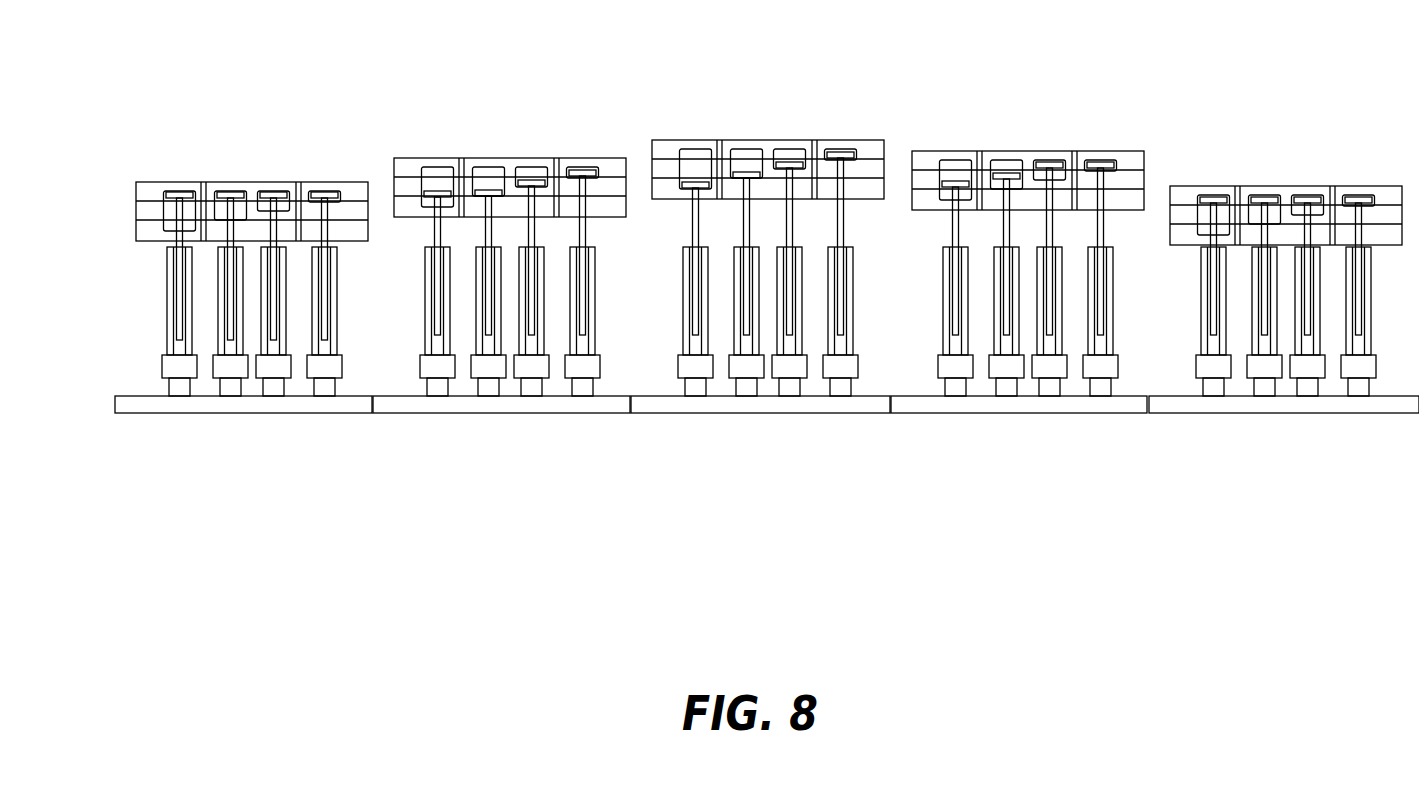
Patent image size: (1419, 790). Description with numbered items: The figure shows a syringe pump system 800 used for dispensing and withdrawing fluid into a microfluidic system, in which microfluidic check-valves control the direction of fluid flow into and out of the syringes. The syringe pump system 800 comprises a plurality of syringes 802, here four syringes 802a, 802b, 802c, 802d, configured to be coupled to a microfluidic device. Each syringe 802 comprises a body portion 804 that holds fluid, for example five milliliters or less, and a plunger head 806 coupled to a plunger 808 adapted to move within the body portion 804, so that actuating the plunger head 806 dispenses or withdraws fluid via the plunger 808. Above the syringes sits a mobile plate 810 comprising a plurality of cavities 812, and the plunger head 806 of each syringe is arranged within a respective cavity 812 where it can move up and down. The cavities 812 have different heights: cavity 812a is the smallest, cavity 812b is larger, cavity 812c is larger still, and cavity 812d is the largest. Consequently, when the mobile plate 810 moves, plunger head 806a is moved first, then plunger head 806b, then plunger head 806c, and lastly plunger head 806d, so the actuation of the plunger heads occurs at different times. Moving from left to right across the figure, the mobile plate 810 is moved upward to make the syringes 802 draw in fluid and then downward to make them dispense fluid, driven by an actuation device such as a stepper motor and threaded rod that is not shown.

The syringe pump system 800 is at (160, 104).
The syringe 802 is at (211, 331).
The syringe 802a is at (838, 345).
The syringe 802b is at (788, 345).
The syringe 802c is at (745, 345).
The syringe 802d is at (697, 350).
The body portion 804 is at (168, 280).
The plunger head 806 is at (177, 195).
The plunger head 806a is at (850, 168).
The plunger head 806b is at (797, 171).
The plunger head 806c is at (734, 184).
The plunger head 806d is at (690, 198).
The plunger 808 is at (177, 327).
The mobile plate 810 is at (251, 175).
The cavity 812 is at (320, 193).
The cavity 812a is at (842, 157).
The cavity 812b is at (782, 152).
The cavity 812c is at (747, 155).
The cavity 812d is at (688, 155).